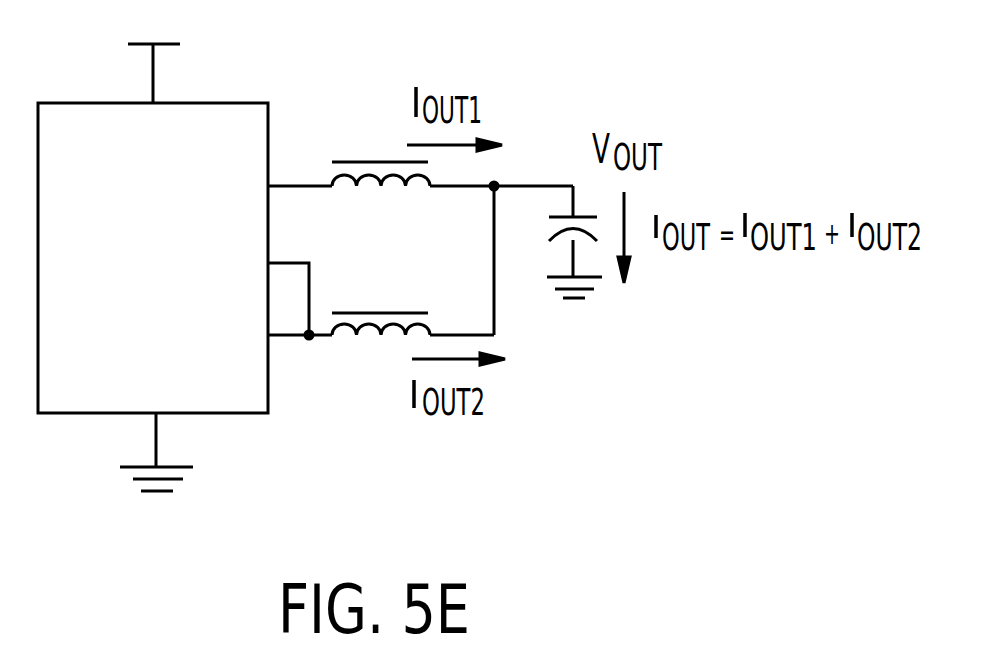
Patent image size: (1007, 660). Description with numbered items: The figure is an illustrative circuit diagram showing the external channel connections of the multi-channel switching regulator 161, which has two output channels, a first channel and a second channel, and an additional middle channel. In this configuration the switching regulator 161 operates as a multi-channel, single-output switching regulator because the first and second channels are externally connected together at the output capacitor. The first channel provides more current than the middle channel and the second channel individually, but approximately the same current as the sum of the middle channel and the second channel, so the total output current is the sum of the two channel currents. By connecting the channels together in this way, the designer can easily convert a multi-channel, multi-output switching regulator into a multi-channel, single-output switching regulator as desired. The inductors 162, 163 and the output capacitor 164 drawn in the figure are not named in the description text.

The multi-channel switching regulator 161 is at (62, 100).
The channel 1 output inductor 162 is at (381, 166).
The channel 2 output inductor 163 is at (381, 316).
The output capacitor 164 is at (566, 242).